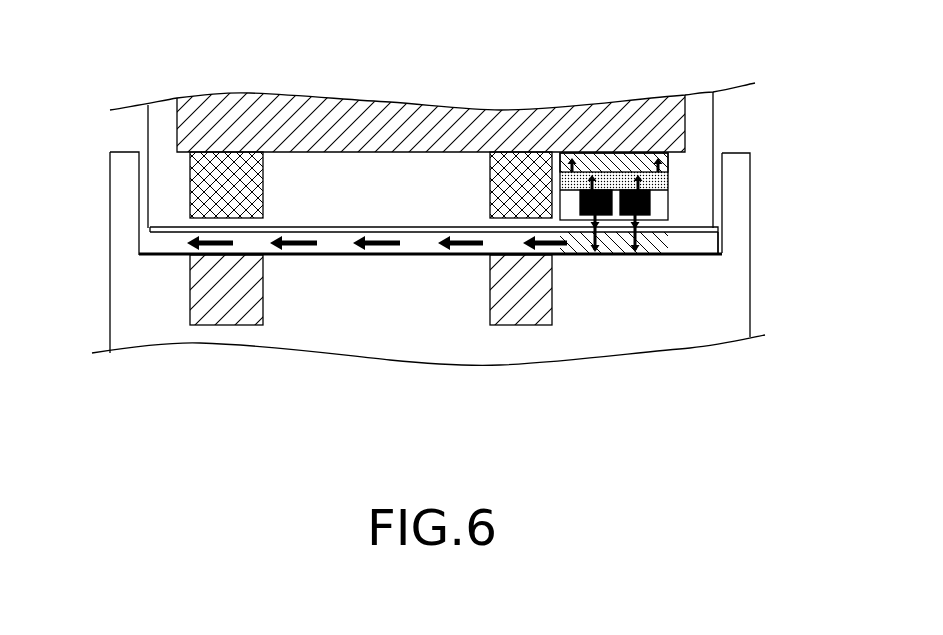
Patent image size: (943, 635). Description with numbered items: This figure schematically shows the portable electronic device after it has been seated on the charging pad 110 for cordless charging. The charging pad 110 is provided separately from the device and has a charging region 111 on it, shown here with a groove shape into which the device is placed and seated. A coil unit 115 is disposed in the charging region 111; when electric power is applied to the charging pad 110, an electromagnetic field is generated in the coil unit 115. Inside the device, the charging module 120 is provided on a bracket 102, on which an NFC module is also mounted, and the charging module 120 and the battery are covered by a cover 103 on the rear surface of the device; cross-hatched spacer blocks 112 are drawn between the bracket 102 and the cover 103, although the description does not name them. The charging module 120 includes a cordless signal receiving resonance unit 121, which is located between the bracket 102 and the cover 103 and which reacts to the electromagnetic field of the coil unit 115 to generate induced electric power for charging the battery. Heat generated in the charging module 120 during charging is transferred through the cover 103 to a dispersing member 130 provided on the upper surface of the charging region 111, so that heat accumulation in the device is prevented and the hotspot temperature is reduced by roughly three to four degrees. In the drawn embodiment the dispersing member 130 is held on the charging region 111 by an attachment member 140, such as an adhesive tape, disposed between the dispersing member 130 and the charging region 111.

The bracket 102 is at (443, 120).
The cover 103 is at (323, 217).
The charging pad 110 is at (725, 317).
The charging region 111 is at (718, 257).
The support member 112 is at (200, 175).
The coil unit 115 is at (523, 310).
The charging module 120 is at (347, 243).
The cordless signal receiving resonance unit 121 is at (665, 195).
The dispersing member 130 is at (702, 243).
The attachment member 140 is at (162, 252).